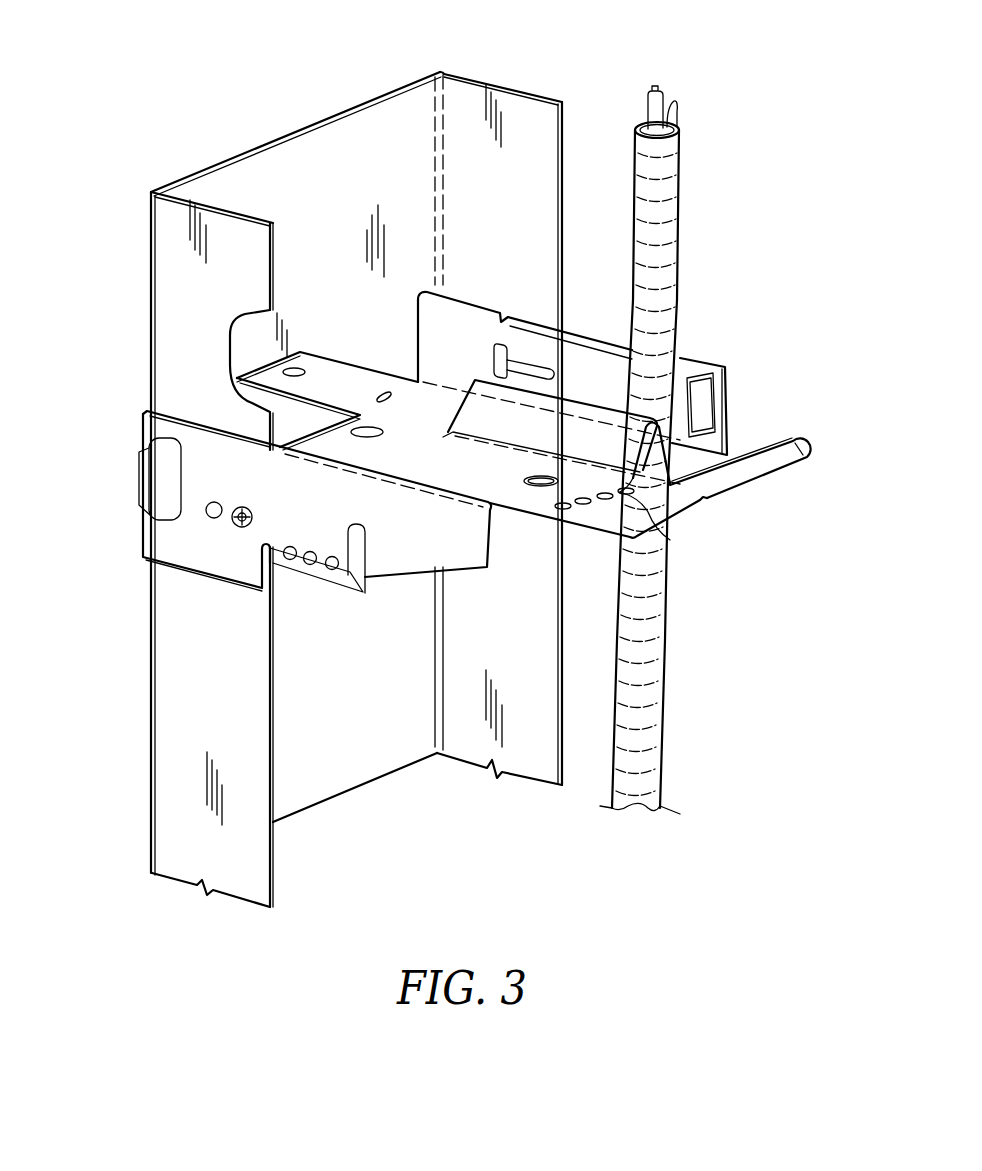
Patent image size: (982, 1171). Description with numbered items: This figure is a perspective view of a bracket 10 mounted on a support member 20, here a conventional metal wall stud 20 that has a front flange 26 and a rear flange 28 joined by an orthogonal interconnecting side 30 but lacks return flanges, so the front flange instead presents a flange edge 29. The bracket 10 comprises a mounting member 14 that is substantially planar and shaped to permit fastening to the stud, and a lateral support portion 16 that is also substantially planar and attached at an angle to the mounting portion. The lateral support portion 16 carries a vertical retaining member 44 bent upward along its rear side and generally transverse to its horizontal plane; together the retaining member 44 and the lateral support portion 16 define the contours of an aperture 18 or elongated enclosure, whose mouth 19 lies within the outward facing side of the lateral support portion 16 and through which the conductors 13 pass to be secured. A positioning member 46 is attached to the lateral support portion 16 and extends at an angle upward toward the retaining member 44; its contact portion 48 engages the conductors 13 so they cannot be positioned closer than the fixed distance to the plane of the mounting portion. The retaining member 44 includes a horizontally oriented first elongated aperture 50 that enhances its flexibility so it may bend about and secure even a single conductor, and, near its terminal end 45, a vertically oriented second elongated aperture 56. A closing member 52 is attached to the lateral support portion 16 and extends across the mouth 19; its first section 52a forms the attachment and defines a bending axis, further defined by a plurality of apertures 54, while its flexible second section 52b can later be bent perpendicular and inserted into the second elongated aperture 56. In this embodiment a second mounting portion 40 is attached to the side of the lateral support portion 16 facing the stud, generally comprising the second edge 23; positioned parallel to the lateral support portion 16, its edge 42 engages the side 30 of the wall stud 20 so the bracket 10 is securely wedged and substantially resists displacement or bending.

The bracket 10 is at (442, 470).
The conductors 13 is at (667, 197).
The mounting member 14 is at (160, 527).
The lateral support portion 16 is at (462, 468).
The aperture 18 is at (746, 453).
The mouth 19 is at (693, 467).
The support member 20 is at (339, 470).
The second edge 23 is at (442, 444).
The front flange 26 is at (175, 549).
The rear flange 28 is at (477, 92).
The flange edge 29 is at (272, 238).
The interconnecting side 30 is at (242, 178).
The second mounting portion 40 is at (253, 365).
The edge 42 is at (247, 370).
The retaining member 44 is at (525, 306).
The terminal end 45 is at (727, 374).
The positioning member 46 is at (633, 478).
The contact portion 48 is at (672, 478).
The first elongated aperture 50 is at (533, 368).
The closing member 52 is at (729, 516).
The first section 52a is at (625, 525).
The second section 52b is at (780, 453).
The apertures 54 is at (605, 498).
The second elongated aperture 56 is at (697, 397).